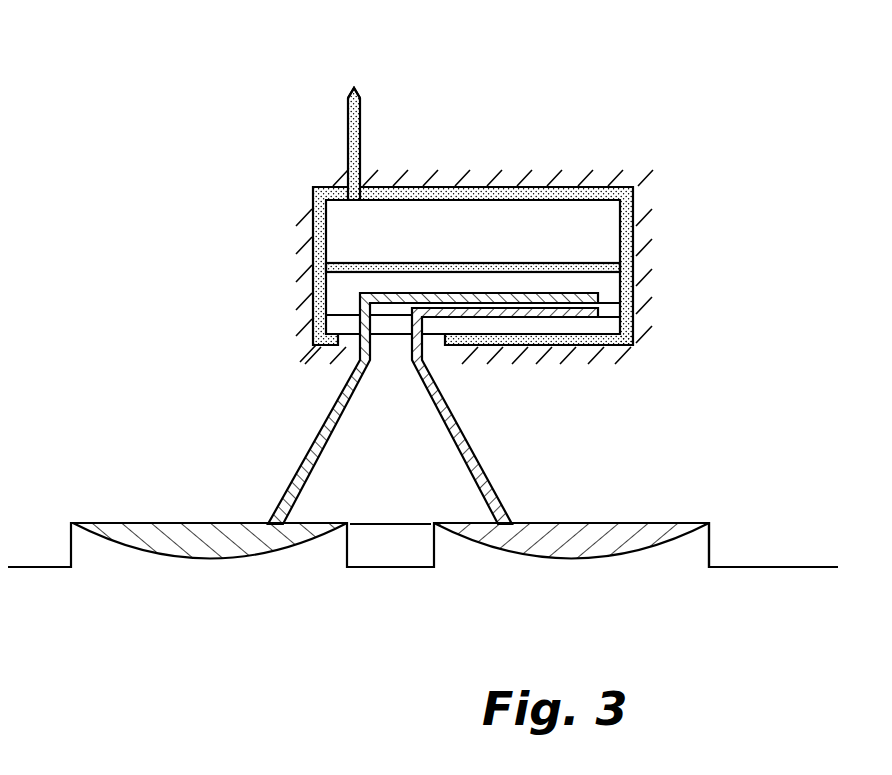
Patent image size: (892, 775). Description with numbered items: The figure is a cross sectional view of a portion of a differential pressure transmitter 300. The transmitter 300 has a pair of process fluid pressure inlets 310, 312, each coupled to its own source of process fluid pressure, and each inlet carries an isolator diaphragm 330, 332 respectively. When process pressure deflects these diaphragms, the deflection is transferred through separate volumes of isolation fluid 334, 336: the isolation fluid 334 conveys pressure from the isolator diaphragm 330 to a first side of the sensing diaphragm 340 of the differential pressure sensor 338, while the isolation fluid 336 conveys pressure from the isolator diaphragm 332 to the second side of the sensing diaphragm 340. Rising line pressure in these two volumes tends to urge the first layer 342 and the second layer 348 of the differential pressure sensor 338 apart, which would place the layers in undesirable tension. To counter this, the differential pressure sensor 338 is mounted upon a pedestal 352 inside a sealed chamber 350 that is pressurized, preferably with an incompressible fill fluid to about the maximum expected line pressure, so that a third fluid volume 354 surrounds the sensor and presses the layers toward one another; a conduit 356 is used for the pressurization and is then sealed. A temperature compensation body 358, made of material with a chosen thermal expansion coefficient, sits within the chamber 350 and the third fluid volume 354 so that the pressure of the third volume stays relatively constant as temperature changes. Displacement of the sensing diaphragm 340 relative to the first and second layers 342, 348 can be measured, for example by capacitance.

The transmitter 300 is at (474, 101).
The process fluid pressure inlet 310 is at (166, 595).
The process fluid pressure inlet 312 is at (606, 595).
The isolator diaphragm 330 is at (103, 538).
The isolator diaphragm 332 is at (672, 542).
The isolation fluid 334 is at (203, 538).
The isolation fluid 336 is at (585, 540).
The differential pressure sensor 338 is at (630, 284).
The sensing diaphragm 340 is at (549, 318).
The first layer 342 is at (597, 276).
The second layer 348 is at (440, 334).
The sealed chamber 350 is at (508, 186).
The pedestal 352 is at (395, 334).
The third fluid volume 354 is at (348, 168).
The conduit 356 is at (360, 108).
The temperature compensation body 358 is at (492, 238).